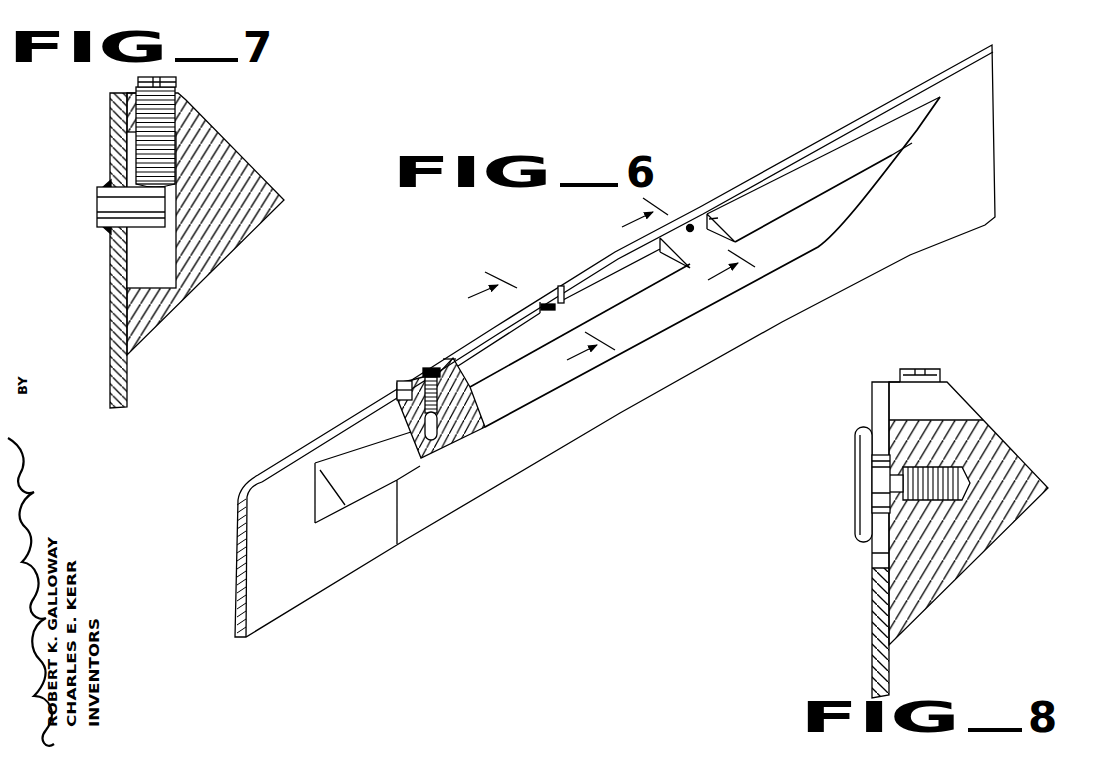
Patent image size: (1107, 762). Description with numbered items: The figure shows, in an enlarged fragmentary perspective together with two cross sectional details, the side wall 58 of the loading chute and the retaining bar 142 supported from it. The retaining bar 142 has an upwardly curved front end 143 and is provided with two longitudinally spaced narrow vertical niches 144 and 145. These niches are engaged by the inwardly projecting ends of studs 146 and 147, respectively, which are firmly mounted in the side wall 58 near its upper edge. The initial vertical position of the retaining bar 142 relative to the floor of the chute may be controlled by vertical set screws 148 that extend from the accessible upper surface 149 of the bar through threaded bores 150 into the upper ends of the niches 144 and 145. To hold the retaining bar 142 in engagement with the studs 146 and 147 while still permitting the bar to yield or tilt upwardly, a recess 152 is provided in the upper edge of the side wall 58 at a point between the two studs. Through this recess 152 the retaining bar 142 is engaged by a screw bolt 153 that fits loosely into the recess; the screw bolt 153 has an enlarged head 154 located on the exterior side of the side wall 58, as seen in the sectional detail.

In FIG. 7, the side wall 58 is at (119, 380).
In FIG. 6, the side wall 58 is at (728, 347).
In FIG. 8, the side wall 58 is at (879, 664).
In FIG. 7, the retaining bar 142 is at (228, 246).
In FIG. 6, the retaining bar 142 is at (579, 372).
In FIG. 8, the retaining bar 142 is at (1004, 457).
In FIG. 6, the upwardly curved front end 143 is at (912, 143).
In FIG. 6, the niche 144 is at (435, 445).
In FIG. 7, the niche 145 is at (165, 273).
In FIG. 6, the stud 146 is at (401, 440).
In FIG. 7, the stud 147 is at (103, 206).
In FIG. 7, the vertical set screw 148 is at (178, 84).
In FIG. 6, the vertical set screw 148 is at (441, 373).
In FIG. 8, the vertical set screw 148 is at (940, 371).
In FIG. 7, the upper surface 149 is at (134, 94).
In FIG. 6, the upper surface 149 is at (443, 359).
In FIG. 8, the upper surface 149 is at (897, 382).
In FIG. 7, the threaded bore 150 is at (180, 106).
In FIG. 6, the threaded bore 150 is at (403, 381).
In FIG. 6, the recess 152 is at (559, 288).
In FIG. 8, the recess 152 is at (889, 554).
In FIG. 8, the screw bolt 153 is at (928, 467).
In FIG. 6, the enlarged head 154 is at (550, 311).
In FIG. 8, the enlarged head 154 is at (866, 498).